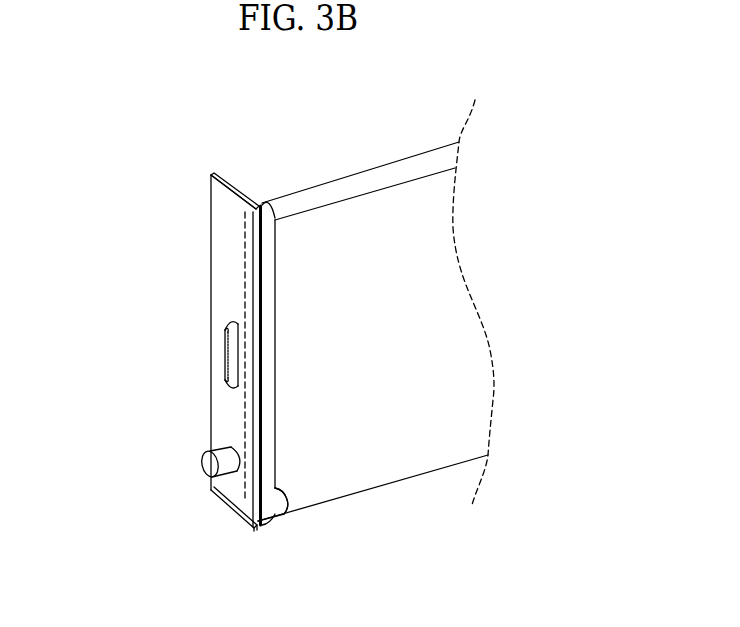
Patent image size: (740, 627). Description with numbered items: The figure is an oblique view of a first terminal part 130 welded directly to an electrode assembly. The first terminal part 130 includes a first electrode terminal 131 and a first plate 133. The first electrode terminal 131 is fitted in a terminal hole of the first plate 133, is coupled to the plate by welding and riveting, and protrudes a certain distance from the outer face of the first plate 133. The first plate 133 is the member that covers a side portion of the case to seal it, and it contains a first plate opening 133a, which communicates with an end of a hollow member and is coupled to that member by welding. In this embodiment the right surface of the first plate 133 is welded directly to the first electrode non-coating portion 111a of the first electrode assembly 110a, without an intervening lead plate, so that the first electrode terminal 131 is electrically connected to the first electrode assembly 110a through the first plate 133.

The first electrode assembly 110a is at (335, 181).
The first electrode non-coating portion 111a is at (274, 498).
The first terminal part 130 is at (177, 352).
The first electrode terminal 131 is at (198, 468).
The first plate 133 is at (216, 244).
The first plate opening 133a is at (228, 360).